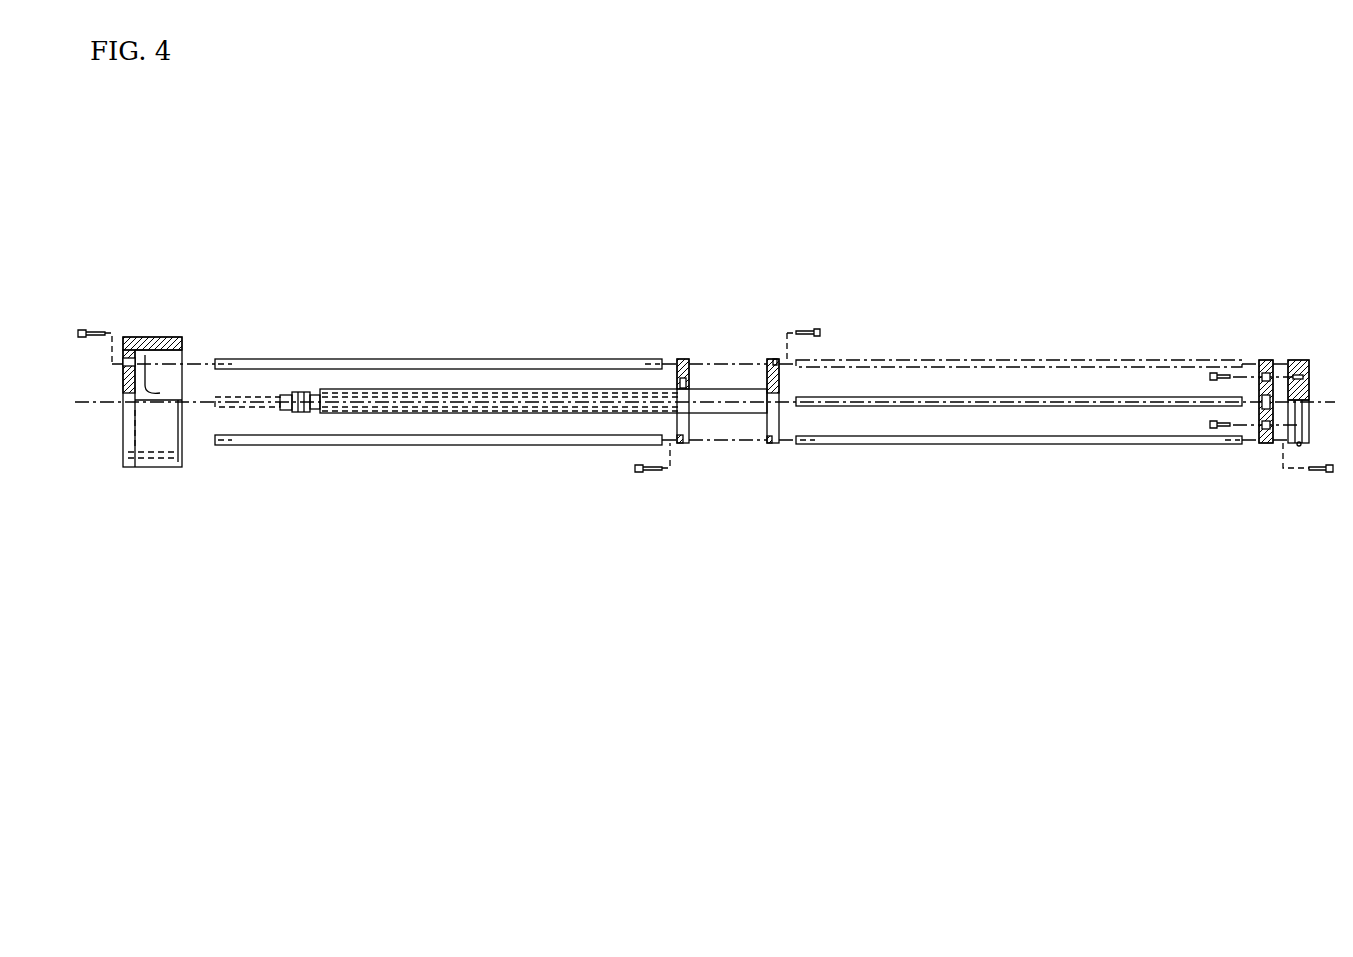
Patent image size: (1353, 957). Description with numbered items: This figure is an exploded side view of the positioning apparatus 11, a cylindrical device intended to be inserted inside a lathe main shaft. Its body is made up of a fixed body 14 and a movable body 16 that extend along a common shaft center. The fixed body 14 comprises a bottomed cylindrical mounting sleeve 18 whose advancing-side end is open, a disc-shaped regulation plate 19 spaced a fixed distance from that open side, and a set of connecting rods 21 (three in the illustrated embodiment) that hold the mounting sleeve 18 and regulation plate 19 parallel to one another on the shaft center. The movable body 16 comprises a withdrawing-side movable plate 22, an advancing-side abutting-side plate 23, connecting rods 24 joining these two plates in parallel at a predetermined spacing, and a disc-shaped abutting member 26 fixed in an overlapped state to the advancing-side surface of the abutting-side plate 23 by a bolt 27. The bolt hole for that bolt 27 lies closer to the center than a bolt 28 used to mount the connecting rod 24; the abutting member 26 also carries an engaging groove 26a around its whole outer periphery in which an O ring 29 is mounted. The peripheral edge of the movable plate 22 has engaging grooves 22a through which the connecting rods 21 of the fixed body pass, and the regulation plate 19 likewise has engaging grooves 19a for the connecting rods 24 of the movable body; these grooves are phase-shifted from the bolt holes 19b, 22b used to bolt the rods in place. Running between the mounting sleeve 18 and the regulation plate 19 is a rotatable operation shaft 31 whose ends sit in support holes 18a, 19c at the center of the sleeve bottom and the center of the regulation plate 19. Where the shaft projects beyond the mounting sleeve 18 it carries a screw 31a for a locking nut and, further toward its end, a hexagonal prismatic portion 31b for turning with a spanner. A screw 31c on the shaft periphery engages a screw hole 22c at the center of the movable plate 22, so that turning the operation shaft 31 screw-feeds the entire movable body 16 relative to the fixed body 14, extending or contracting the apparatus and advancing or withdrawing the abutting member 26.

The positioning apparatus 11 is at (445, 300).
The fixed body 14 is at (405, 452).
The movable body 16 is at (1022, 455).
The mounting sleeve 18 is at (152, 468).
The support hole 18a is at (160, 393).
The regulation plate 19 is at (772, 445).
The engaging grooves 19a is at (782, 447).
The bolt holes 19b is at (783, 358).
The support hole 19c is at (781, 400).
The connecting rods 21 is at (242, 393).
The movable plate 22 is at (686, 445).
The engaging grooves 22a is at (683, 359).
The bolt holes 22b is at (673, 476).
The screw hole 22c is at (689, 397).
The abutting-side plate 23 is at (1268, 444).
The connecting rods 24 is at (1005, 357).
The abutting member 26 is at (1285, 356).
The engaging groove 26a is at (1298, 360).
The bolt 27 is at (1212, 379).
The bolt 28 is at (1325, 472).
The O ring 29 is at (1300, 446).
The operation shaft 31 is at (447, 414).
The screw 31a is at (302, 414).
The prismatic portion 31b is at (283, 412).
The screw 31c is at (483, 414).